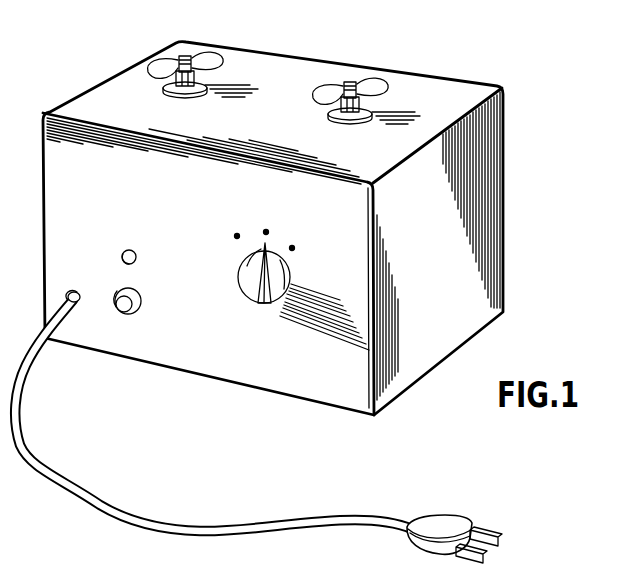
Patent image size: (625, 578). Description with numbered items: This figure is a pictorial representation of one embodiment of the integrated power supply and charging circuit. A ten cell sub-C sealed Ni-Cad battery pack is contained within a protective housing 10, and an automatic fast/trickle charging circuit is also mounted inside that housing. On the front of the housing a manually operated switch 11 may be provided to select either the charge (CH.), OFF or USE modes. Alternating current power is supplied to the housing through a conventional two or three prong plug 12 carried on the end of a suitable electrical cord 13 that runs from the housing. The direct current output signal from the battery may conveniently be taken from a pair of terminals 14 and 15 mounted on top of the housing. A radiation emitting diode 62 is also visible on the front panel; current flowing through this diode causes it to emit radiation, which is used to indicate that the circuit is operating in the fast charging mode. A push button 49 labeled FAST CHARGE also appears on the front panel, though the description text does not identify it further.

The protective housing 10 is at (497, 181).
The manually operated switch 11 is at (253, 301).
The two or three prong plug 12 is at (447, 517).
The electrical cord 13 is at (148, 527).
The terminal 14 is at (209, 46).
The terminal 15 is at (349, 81).
The fast charge push button 49 is at (139, 297).
The radiation emitting diode 62 is at (124, 251).